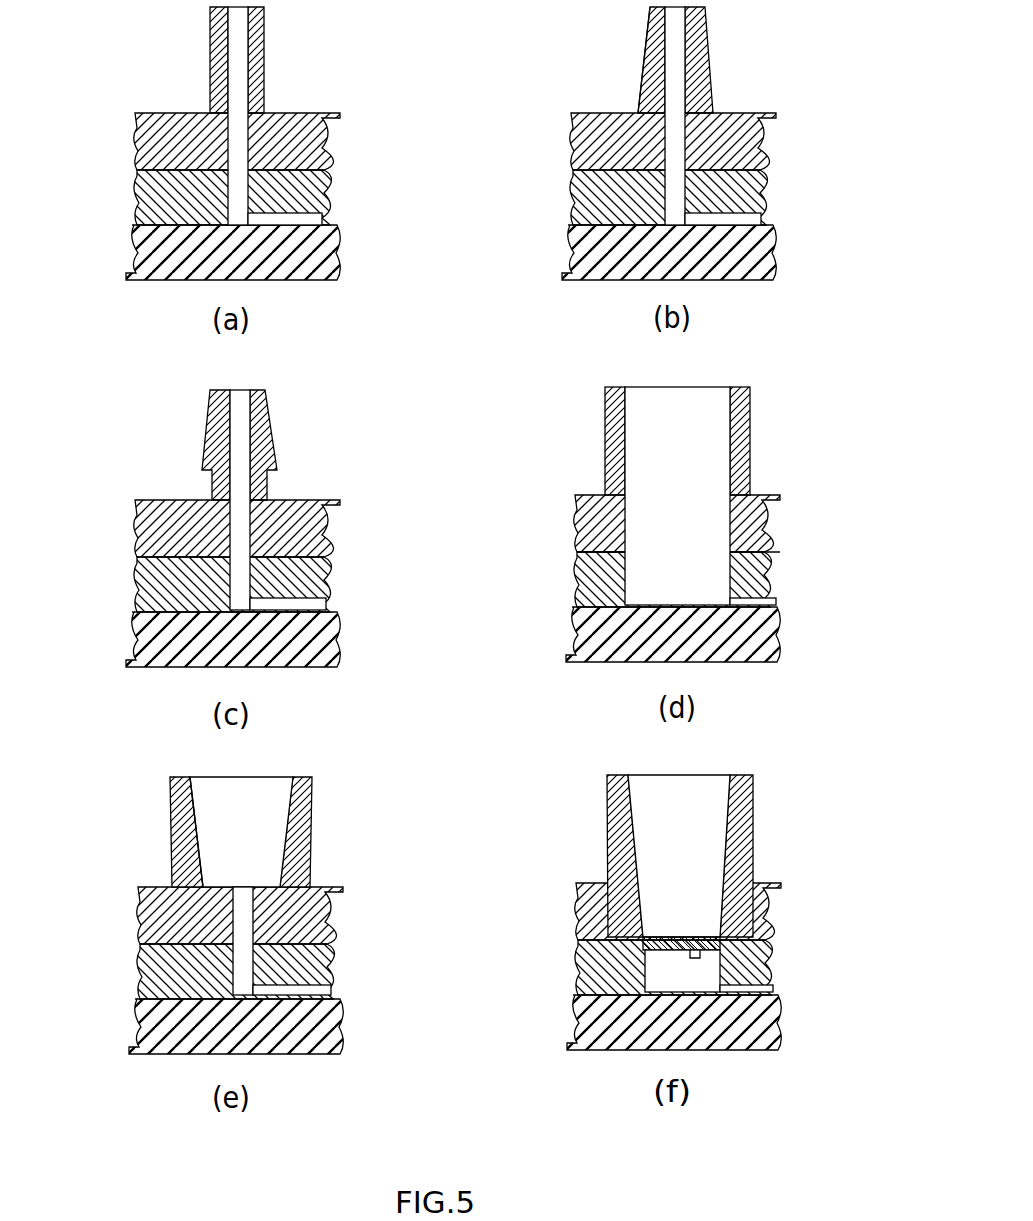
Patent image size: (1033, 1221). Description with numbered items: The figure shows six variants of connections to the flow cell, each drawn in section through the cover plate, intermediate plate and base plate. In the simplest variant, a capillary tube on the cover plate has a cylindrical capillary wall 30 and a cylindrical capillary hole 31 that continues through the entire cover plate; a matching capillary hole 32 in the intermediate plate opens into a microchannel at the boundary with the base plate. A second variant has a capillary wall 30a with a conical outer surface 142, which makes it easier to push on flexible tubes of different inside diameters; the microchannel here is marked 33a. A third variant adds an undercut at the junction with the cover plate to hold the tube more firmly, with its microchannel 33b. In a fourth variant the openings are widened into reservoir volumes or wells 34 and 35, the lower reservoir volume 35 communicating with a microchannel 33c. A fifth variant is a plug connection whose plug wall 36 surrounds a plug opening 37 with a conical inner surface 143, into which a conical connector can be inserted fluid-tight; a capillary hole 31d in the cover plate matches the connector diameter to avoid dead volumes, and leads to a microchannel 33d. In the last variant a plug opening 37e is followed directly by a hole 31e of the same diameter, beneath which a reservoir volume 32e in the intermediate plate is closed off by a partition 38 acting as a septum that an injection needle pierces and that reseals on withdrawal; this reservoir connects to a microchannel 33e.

The capillary wall 30 is at (266, 80).
The capillary hole 31 is at (238, 44).
The capillary hole 32 is at (140, 186).
The capillary wall 30a is at (705, 62).
The conical outer surface 142 is at (642, 62).
The gap 33a is at (764, 219).
The gap 33b is at (325, 608).
The reservoir volume 34 is at (675, 533).
The reservoir volume 35 is at (700, 578).
The microchannel 33c is at (772, 600).
The plug wall 36 is at (312, 832).
The plug opening 37 is at (262, 817).
The conical inner surface 143 is at (195, 822).
The capillary hole 31d is at (322, 915).
The gap 33d is at (330, 992).
The plug opening 37e is at (650, 808).
The hole 31e is at (658, 907).
The reservoir volume 32e is at (675, 970).
The partition 38 is at (772, 960).
The gap 33e is at (775, 990).